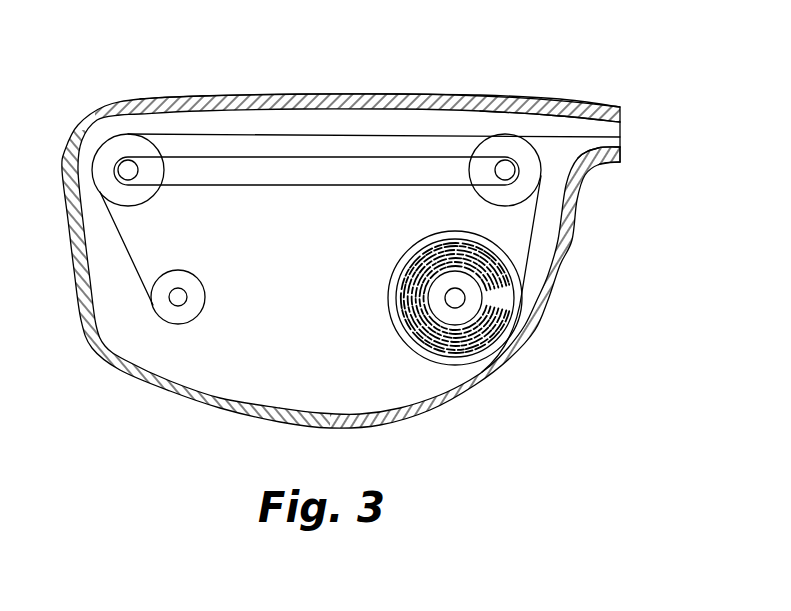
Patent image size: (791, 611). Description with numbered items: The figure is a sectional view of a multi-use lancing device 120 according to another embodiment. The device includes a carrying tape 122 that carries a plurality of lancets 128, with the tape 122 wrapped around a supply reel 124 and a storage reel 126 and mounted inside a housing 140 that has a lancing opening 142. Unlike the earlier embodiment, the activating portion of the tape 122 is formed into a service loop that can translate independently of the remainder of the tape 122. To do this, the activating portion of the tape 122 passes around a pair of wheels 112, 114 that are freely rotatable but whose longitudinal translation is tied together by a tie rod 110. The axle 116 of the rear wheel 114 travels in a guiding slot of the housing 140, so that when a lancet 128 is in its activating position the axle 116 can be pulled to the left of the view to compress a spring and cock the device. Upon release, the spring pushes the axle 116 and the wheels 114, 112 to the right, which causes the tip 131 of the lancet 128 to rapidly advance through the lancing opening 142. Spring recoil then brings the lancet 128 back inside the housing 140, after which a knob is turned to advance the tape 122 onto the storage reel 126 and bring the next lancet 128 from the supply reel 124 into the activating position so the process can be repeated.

The multi-use lancing device 120 is at (553, 60).
The housing 140 is at (333, 98).
The lancet 128 is at (566, 138).
The tip 131 is at (620, 136).
The lancing opening 142 is at (623, 142).
The carrying tape 122 is at (530, 240).
The tie rod 110 is at (203, 166).
The rear wheel 114 is at (117, 147).
The axle 116 is at (117, 170).
The wheel 112 is at (508, 145).
The storage reel 126 is at (185, 310).
The supply reel 124 is at (497, 343).